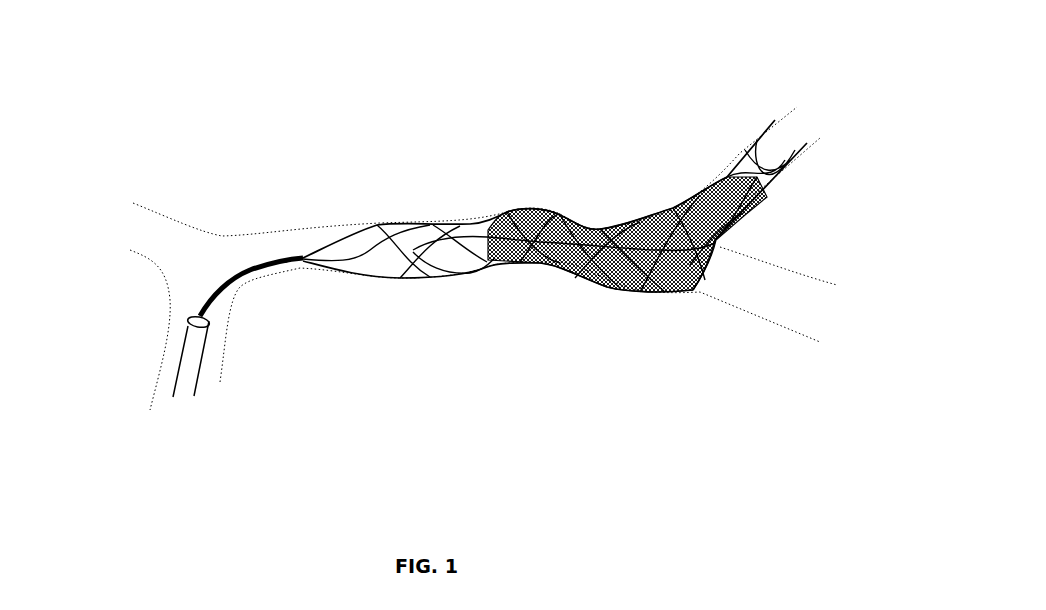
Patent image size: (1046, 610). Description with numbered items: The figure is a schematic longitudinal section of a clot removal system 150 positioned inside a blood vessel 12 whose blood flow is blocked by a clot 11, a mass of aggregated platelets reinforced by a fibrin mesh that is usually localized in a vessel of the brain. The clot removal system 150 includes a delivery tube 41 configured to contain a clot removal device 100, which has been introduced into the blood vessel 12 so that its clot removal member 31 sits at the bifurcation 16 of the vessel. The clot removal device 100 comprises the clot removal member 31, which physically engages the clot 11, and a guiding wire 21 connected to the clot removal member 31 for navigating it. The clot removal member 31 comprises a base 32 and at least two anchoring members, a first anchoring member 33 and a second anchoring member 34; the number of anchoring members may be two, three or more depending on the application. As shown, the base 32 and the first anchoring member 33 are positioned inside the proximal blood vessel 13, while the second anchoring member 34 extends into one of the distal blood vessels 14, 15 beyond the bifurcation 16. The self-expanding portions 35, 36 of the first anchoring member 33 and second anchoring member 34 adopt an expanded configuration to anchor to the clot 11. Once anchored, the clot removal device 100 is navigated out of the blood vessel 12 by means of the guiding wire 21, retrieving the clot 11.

The clot removal device 100 is at (581, 237).
The clot 11 is at (610, 230).
The blood vessel 12 is at (157, 329).
The proximal blood vessel 13 is at (278, 287).
The distal blood vessel 14 is at (784, 333).
The distal blood vessel 15 is at (820, 131).
The bifurcation 16 is at (724, 243).
The guiding wire 21 is at (230, 270).
The clot removal member 31 is at (413, 288).
The base 32 is at (375, 230).
The first anchoring member 33 is at (668, 302).
The second anchoring member 34 is at (687, 197).
The self-expanding portion 35 is at (620, 290).
The self-expanding portion 36 is at (647, 220).
The delivery tube 41 is at (183, 377).
The clot removal system 150 is at (498, 502).